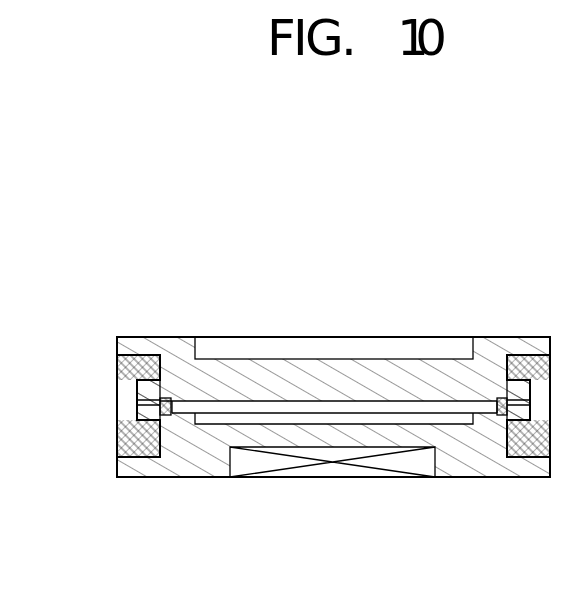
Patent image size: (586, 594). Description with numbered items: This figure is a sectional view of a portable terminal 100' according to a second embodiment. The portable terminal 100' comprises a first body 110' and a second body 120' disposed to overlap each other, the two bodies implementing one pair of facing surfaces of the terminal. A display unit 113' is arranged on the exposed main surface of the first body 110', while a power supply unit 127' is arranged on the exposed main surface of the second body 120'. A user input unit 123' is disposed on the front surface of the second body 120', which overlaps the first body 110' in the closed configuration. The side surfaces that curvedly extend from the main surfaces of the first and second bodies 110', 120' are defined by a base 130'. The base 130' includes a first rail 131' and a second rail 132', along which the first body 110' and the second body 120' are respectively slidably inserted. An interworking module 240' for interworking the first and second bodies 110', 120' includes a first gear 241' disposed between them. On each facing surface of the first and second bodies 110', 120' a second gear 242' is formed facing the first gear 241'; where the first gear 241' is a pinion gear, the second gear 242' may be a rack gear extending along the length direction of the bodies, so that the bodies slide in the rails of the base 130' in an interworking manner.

The portable terminal 100' is at (333, 327).
The first body 110' is at (339, 324).
The display unit 113' is at (334, 303).
The second body 120' is at (347, 493).
The user input unit 123' is at (334, 484).
The power supply unit 127' is at (332, 501).
The base 130' is at (293, 409).
The first rail 131' is at (98, 365).
The second rail 132' is at (98, 444).
The interworking module 240' is at (320, 401).
The first gear 241' is at (160, 331).
The second gear 242' is at (167, 477).